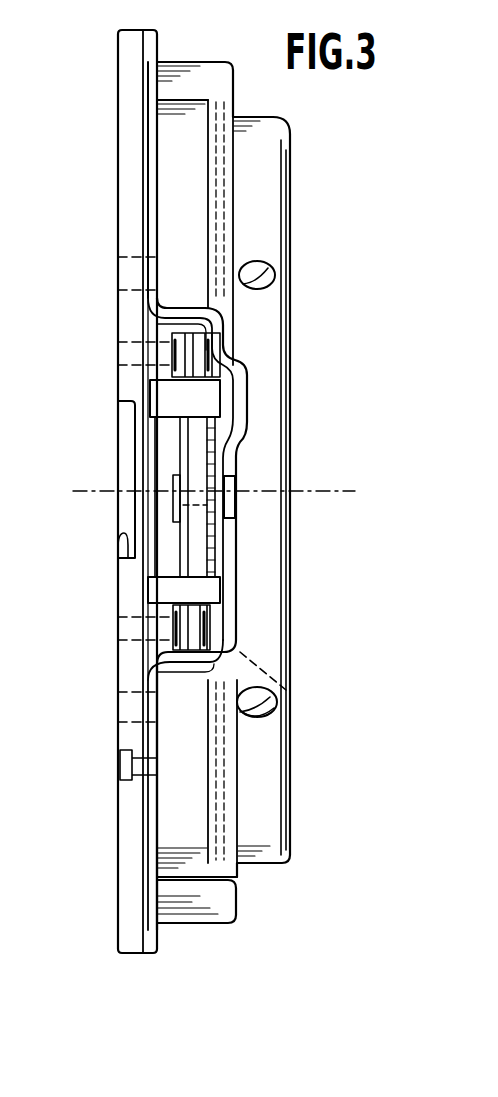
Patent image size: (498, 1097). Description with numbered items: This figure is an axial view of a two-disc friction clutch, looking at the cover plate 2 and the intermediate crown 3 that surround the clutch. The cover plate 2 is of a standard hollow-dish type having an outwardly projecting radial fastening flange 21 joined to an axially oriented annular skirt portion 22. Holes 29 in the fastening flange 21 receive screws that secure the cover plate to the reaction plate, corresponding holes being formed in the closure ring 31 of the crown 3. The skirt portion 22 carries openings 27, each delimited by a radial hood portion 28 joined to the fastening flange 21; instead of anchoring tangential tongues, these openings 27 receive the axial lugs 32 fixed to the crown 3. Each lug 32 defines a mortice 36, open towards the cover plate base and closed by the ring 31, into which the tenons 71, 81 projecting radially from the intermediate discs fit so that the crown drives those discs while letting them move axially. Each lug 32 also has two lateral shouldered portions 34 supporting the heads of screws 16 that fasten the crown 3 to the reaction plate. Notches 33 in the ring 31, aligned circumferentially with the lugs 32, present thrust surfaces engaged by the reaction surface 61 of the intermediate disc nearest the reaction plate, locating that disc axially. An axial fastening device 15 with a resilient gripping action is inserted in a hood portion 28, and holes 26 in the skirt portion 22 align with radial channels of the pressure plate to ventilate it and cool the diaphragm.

The cover plate 2 is at (273, 866).
The intermediate crown 3 is at (117, 912).
The axial fastening device 15 is at (221, 517).
The screws 16 is at (286, 690).
The fastening flange 21 is at (160, 937).
The skirt portion 22 is at (260, 113).
The holes 26 is at (280, 275).
The openings 27 is at (228, 404).
The hood portion 28 is at (193, 637).
The holes 29 is at (150, 690).
The closure ring 31 is at (118, 152).
The axial lugs 32 is at (207, 592).
The notch 33 is at (118, 533).
The lateral shouldered portions 34 is at (165, 337).
The mortice 36 is at (153, 440).
The reaction surface 61 is at (127, 462).
The tenon 71 is at (167, 462).
The tenon 81 is at (193, 447).